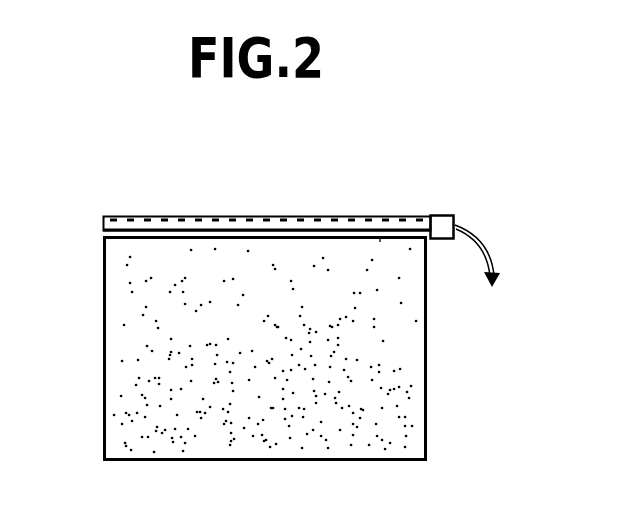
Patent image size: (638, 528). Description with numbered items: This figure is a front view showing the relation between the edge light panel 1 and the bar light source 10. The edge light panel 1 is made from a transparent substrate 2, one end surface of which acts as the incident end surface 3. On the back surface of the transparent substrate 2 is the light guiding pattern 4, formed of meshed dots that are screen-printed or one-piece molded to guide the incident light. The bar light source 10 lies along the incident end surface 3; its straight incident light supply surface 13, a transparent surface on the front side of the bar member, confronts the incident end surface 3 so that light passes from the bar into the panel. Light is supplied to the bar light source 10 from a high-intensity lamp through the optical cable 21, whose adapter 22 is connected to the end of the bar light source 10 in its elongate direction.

The edge light panel 1 is at (323, 349).
The transparent substrate 2 is at (426, 364).
The incident end surface 3 is at (381, 240).
The light guiding pattern 4 is at (497, 358).
The bar light source 10 is at (267, 189).
The incident light supply surface 13 is at (287, 229).
The optical cable 21 is at (485, 247).
The adapter 22 is at (443, 215).